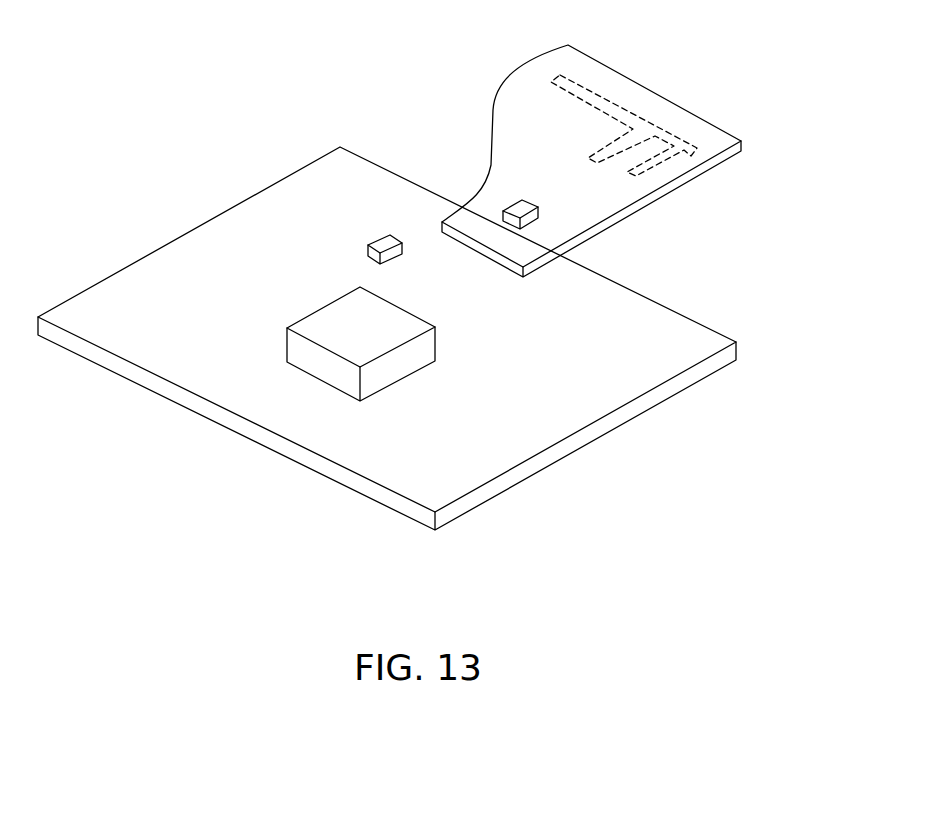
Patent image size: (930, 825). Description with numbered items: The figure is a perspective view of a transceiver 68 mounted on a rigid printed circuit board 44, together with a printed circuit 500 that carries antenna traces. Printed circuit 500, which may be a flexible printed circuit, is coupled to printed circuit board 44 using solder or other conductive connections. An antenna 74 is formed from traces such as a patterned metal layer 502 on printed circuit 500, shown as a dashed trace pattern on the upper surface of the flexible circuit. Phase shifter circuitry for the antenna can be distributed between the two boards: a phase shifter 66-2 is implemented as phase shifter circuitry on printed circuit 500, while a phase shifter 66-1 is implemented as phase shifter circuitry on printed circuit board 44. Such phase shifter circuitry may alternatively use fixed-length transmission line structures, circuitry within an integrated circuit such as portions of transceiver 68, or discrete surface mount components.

The rigid printed circuit board 44 is at (622, 402).
The transceiver 68 is at (373, 338).
The phase shifter 66-1 is at (386, 237).
The phase shifter 66-2 is at (508, 207).
The antenna 74 is at (622, 143).
The printed circuit 500 is at (710, 121).
The patterned metal layer 502 is at (667, 160).